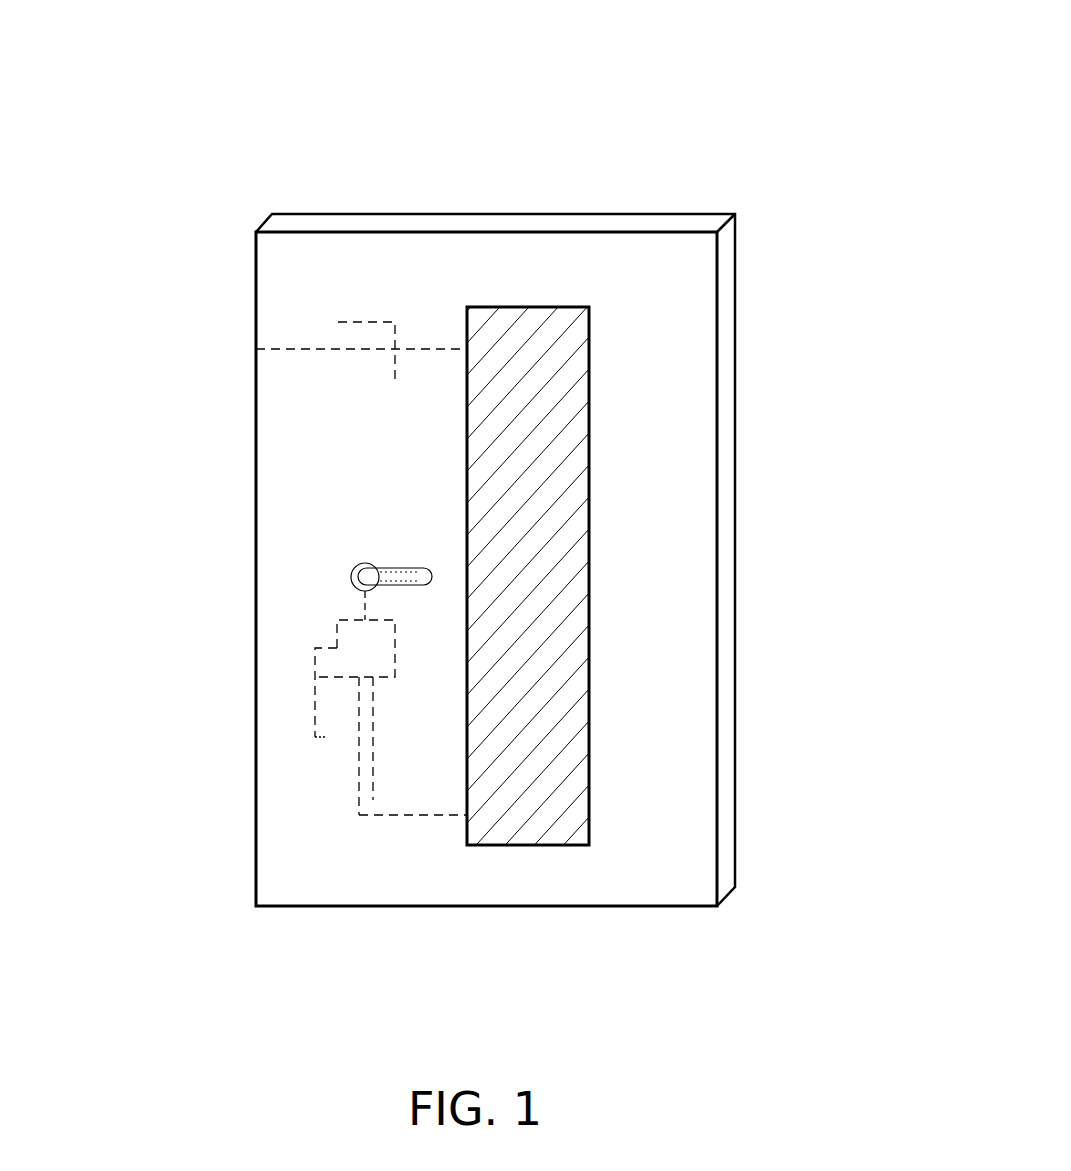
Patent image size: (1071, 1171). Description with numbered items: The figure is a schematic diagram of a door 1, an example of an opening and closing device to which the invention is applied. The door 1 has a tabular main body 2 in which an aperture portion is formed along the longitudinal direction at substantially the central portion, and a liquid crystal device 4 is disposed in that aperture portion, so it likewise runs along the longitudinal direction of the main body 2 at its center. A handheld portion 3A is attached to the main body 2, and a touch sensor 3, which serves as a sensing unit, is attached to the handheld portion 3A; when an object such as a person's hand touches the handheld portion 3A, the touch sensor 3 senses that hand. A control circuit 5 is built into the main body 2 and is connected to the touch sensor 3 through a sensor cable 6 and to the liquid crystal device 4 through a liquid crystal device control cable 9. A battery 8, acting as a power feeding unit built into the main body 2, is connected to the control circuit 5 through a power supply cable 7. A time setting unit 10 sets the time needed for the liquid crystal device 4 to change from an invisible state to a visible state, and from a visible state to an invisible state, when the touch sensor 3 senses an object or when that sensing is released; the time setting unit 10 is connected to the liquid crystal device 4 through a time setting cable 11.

The door 1 is at (733, 125).
The main body 2 is at (256, 310).
The touch sensor 3 is at (385, 568).
The handheld portion 3A is at (358, 565).
The liquid crystal device 4 is at (527, 307).
The control circuit 5 is at (340, 630).
The sensor cable 6 is at (363, 605).
The power supply cable 7 is at (340, 677).
The battery 8 is at (313, 720).
The liquid crystal device control cable 9 is at (405, 815).
The time setting unit 10 is at (256, 350).
The time setting cable 11 is at (430, 349).